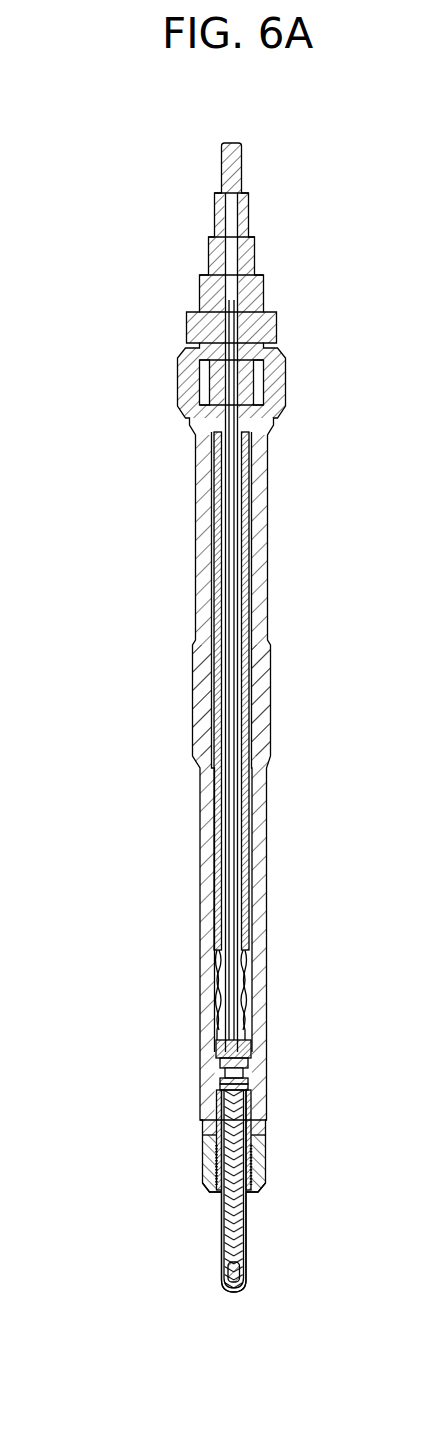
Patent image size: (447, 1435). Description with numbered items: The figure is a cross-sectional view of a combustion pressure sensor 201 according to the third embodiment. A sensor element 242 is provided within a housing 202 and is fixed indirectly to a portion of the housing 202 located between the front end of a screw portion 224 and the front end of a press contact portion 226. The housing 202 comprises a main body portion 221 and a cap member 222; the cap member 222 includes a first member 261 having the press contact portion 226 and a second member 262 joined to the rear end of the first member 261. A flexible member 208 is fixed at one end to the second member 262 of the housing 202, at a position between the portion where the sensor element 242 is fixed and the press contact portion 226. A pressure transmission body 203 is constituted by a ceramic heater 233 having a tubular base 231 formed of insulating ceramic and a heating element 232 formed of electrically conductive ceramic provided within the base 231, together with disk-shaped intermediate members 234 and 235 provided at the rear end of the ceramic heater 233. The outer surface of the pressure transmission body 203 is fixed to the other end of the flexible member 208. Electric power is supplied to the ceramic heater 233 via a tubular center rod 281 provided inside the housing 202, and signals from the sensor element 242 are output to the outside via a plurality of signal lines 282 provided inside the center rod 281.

The combustion pressure sensor 201 is at (327, 297).
The housing 202 is at (149, 828).
The pressure transmission body 203 is at (327, 1175).
The flexible member 208 is at (258, 1157).
The main body portion 221 is at (202, 1097).
The cap member 222 is at (174, 1172).
The screw portion 224 is at (193, 677).
The press contact portion 226 is at (207, 1192).
The tubular base 231 is at (250, 1224).
The heating element 232 is at (250, 1245).
The ceramic heater 233 is at (302, 1191).
The intermediate member 234 is at (250, 1081).
The intermediate member 235 is at (250, 1086).
The sensor element 242 is at (250, 1072).
The first member 261 is at (202, 1168).
The second member 262 is at (202, 1130).
The center rod 281 is at (250, 771).
The signal lines 282 is at (248, 572).